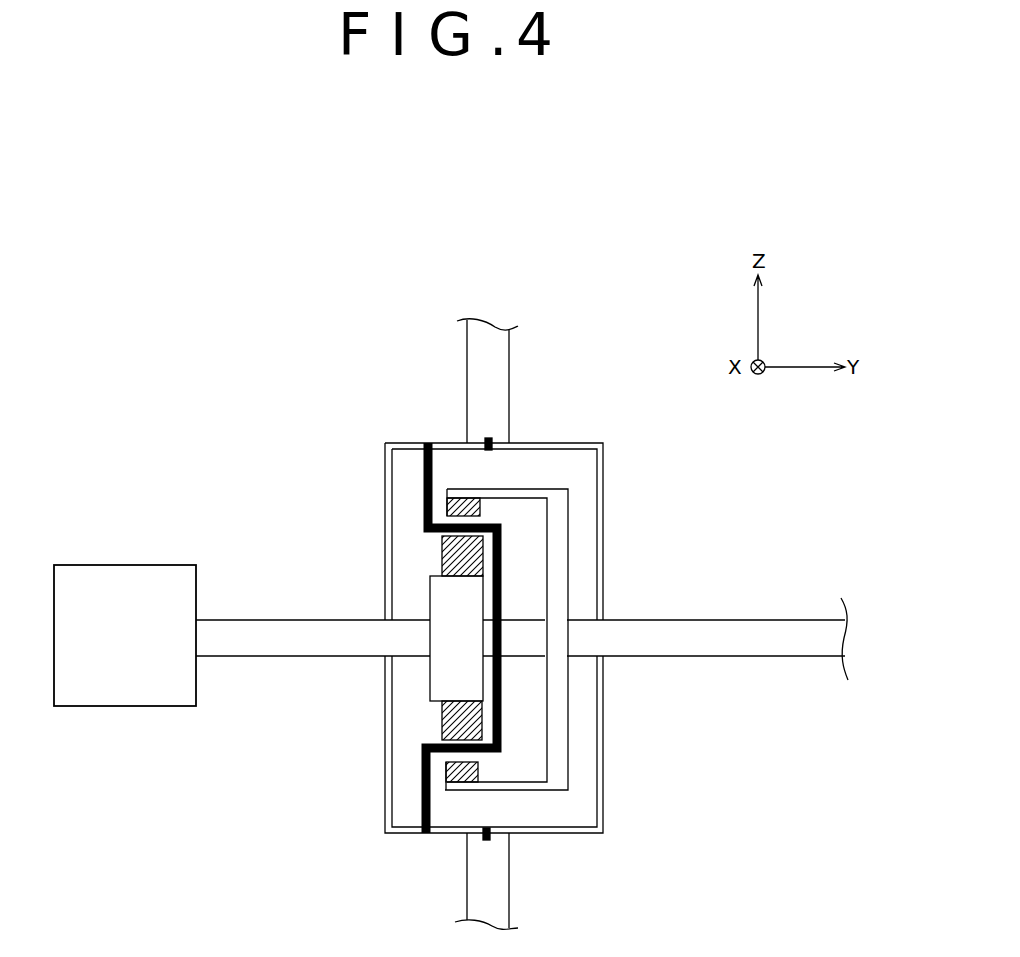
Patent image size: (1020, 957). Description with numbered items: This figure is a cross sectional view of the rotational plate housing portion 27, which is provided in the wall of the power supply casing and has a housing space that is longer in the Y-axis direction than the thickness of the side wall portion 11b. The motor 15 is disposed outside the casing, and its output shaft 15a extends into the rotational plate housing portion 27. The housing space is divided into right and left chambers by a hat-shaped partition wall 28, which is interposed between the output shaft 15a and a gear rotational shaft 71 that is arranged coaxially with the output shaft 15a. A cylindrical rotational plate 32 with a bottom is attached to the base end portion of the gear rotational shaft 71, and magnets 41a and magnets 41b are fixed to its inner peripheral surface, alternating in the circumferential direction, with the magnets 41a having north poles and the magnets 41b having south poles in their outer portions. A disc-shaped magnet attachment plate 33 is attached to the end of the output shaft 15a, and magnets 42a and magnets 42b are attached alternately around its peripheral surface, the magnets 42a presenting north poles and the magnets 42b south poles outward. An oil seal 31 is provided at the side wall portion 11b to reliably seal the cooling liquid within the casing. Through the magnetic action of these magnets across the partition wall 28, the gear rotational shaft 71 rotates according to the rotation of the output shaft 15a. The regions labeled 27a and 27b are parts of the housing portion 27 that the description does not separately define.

The side wall portion 11b is at (497, 375).
The motor 15 is at (130, 690).
The output shaft 15a is at (272, 633).
The rotational plate housing portion 27 is at (610, 810).
The housing first portion 27a is at (575, 805).
The housing second portion 27b is at (405, 805).
The partition wall 28 is at (418, 447).
The oil seal 31 is at (492, 442).
The rotational plate 32 is at (555, 732).
The magnet attachment plate 33 is at (442, 598).
The magnets 41a is at (457, 500).
The magnets 41b is at (470, 770).
The magnets 42a is at (447, 540).
The magnets 42b is at (442, 726).
The gear rotational shaft 71 is at (727, 638).